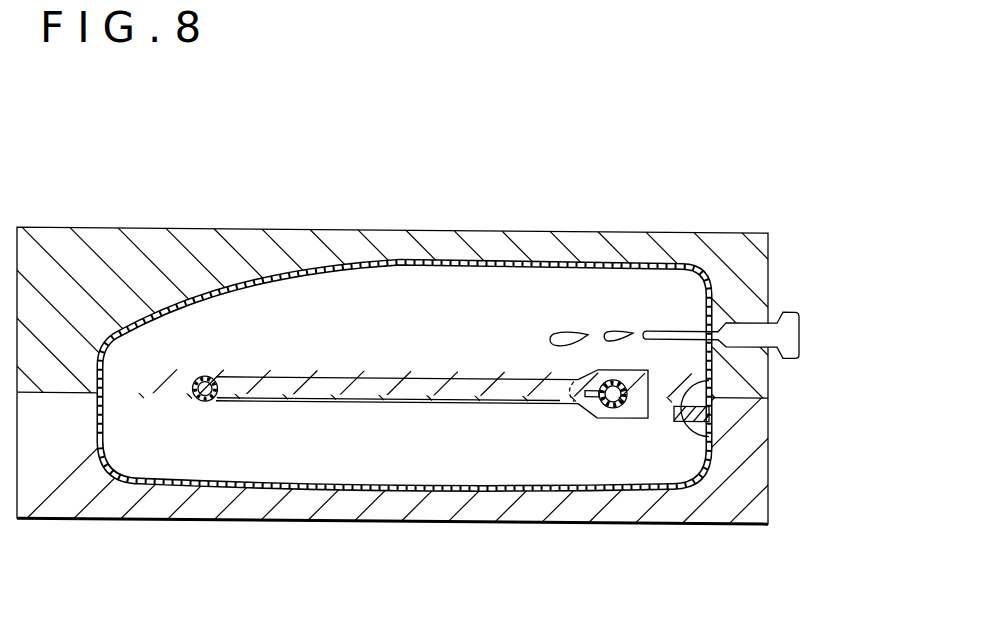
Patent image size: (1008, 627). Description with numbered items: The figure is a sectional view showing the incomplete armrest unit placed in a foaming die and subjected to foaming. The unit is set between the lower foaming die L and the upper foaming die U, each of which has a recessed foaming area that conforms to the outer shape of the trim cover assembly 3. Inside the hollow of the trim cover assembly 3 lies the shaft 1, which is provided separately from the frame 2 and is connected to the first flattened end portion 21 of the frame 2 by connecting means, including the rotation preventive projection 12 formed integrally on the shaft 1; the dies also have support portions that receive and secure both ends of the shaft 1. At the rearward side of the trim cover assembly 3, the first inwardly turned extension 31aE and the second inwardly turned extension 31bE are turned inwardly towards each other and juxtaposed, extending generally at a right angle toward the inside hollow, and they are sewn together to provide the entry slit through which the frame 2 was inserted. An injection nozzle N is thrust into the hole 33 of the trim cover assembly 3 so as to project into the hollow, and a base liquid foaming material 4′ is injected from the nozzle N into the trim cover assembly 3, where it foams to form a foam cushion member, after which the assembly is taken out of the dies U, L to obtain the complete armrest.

The shaft 1 is at (424, 391).
The frame 2 is at (352, 378).
The trim cover assembly 3 is at (399, 270).
The rotation preventive projection 12 is at (588, 398).
The first flattened end portion 21 is at (640, 409).
The hole 33 is at (721, 325).
The first inwardly turned extension 31aE is at (713, 427).
The second inwardly turned extension 31bE is at (709, 378).
The liquid foaming material 4′ is at (553, 330).
The injection nozzle N is at (664, 325).
The upper foaming die U is at (205, 243).
The lower foaming die L is at (112, 519).